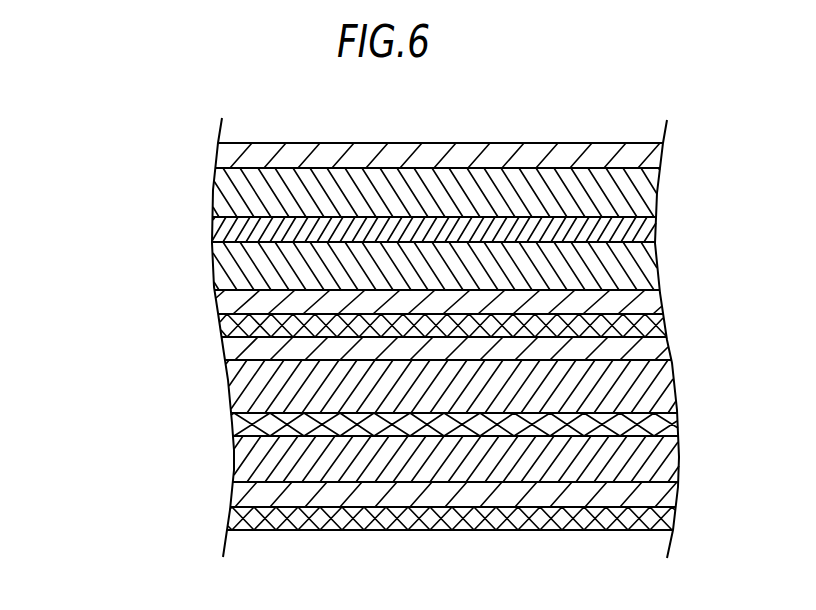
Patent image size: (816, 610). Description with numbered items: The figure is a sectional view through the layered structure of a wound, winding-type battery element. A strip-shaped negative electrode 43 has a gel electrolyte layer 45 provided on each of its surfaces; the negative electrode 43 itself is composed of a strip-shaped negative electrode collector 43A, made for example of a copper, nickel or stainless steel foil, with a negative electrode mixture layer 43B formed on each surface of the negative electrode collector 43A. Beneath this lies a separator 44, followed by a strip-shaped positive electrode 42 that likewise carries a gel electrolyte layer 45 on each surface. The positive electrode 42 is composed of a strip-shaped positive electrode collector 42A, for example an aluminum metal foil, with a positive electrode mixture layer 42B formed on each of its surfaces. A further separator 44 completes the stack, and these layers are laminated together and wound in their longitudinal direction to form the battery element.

The positive electrode 42 is at (132, 393).
The positive electrode collector 42A is at (233, 427).
The positive electrode mixture layer 42B is at (227, 390).
The negative electrode 43 is at (132, 165).
The negative electrode collector 43A is at (212, 228).
The negative electrode mixture layer 43B is at (214, 189).
The separator 44 is at (224, 333).
The gel electrolyte layer 45 is at (223, 153).